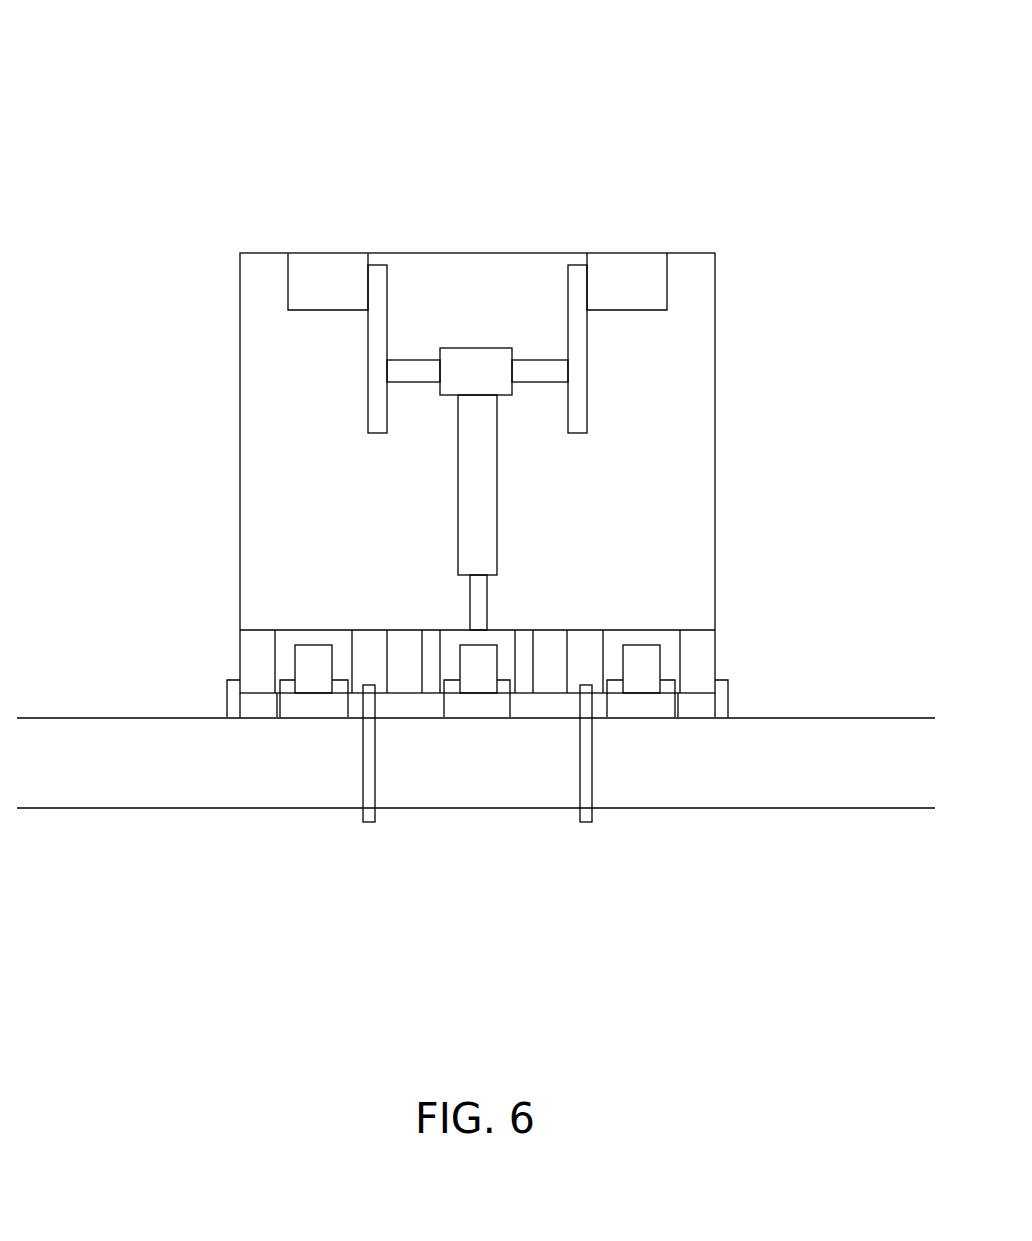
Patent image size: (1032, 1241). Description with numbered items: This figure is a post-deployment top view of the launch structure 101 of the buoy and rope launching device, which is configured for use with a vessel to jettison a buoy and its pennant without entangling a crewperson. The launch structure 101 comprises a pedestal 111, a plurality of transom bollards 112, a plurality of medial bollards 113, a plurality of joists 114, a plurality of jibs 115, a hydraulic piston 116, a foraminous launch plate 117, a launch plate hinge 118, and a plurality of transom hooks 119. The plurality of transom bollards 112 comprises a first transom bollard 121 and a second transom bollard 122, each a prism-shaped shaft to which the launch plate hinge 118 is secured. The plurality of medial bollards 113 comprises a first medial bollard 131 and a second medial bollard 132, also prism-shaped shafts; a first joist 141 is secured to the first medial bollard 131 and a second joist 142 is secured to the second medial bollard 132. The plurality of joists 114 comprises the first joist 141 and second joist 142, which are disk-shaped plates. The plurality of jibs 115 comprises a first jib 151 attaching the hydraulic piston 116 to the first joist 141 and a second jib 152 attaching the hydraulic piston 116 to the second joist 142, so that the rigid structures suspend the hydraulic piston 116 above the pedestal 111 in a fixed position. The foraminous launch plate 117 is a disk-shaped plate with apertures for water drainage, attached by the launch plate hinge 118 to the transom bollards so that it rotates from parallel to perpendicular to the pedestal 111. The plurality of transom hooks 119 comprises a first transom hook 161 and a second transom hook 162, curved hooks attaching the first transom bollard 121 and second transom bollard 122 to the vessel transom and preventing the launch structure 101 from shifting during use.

The launch structure 101 is at (180, 80).
The pedestal 111 is at (693, 352).
The plurality of transom bollards 112 is at (722, 718).
The plurality of medial bollards 113 is at (606, 267).
The plurality of joists 114 is at (569, 297).
The plurality of jibs 115 is at (548, 367).
The hydraulic piston 116 is at (460, 528).
The foraminous launch plate 117 is at (692, 650).
The launch plate hinge 118 is at (333, 708).
The plurality of transom hooks 119 is at (580, 773).
The first transom bollard 121 is at (230, 694).
The second transom bollard 122 is at (726, 698).
The first medial bollard 131 is at (323, 267).
The second medial bollard 132 is at (640, 267).
The first joist 141 is at (368, 374).
The second joist 142 is at (587, 370).
The first jib 151 is at (413, 373).
The second jib 152 is at (530, 373).
The first transom hook 161 is at (368, 822).
The second transom hook 162 is at (586, 822).